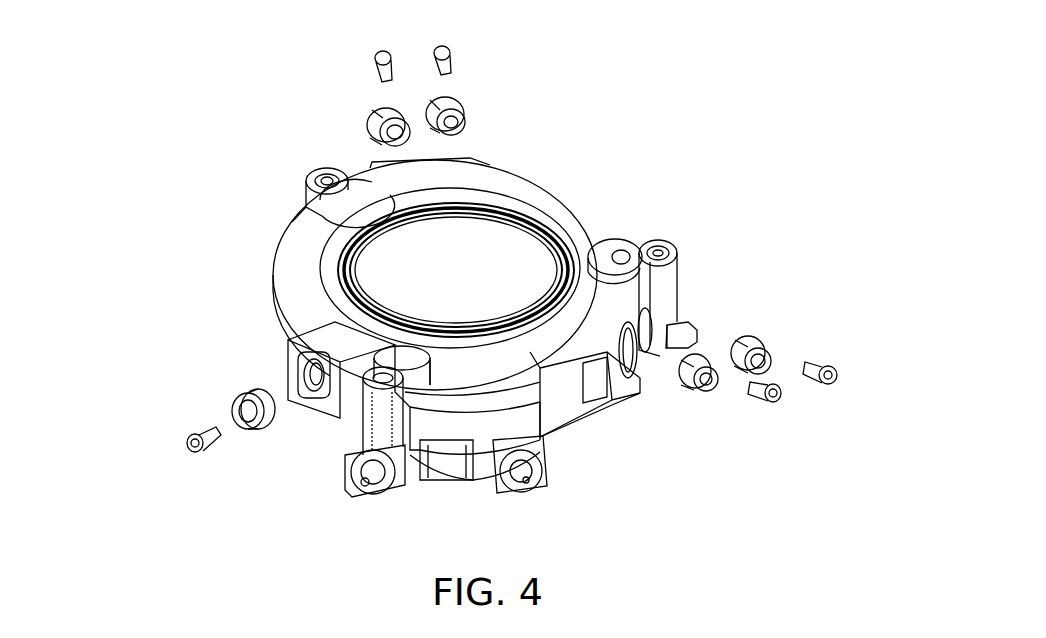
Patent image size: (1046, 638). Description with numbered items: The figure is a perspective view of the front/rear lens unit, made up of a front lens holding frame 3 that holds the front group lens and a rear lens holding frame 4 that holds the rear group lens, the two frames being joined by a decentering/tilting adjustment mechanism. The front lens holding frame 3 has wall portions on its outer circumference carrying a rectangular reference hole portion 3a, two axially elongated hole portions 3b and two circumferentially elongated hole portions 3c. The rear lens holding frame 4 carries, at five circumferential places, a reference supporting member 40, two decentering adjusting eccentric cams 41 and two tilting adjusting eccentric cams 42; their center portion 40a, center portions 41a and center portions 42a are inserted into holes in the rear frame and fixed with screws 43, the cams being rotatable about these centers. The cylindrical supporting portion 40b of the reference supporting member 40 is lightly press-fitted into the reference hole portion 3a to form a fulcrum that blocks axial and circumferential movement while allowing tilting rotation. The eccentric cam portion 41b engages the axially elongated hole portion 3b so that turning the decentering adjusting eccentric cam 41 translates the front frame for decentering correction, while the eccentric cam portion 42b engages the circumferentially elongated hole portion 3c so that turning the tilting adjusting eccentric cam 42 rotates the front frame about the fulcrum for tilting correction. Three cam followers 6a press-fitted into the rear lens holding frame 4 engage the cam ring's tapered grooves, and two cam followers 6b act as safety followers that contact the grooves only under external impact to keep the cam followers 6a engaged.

The front lens holding frame 3 is at (450, 263).
The reference hole portion 3a is at (303, 370).
The axially elongated hole portion 3b is at (596, 419).
The circumferentially elongated hole portion 3c is at (653, 274).
The rear lens holding frame 4 is at (467, 447).
The cam follower 6a is at (387, 449).
The cam follower 6b is at (520, 493).
The reference supporting member 40 is at (239, 451).
The center portion 40a is at (216, 392).
The cylindrical supporting portion 40b is at (276, 437).
The decentering adjusting eccentric cam 41 is at (606, 278).
The center portion 41a is at (568, 289).
The eccentric cam portion 41b is at (592, 282).
The tilting adjusting eccentric cam 42 is at (559, 212).
The center portion 42a is at (521, 239).
The eccentric cam portion 42b is at (565, 231).
The screw 43 is at (512, 254).